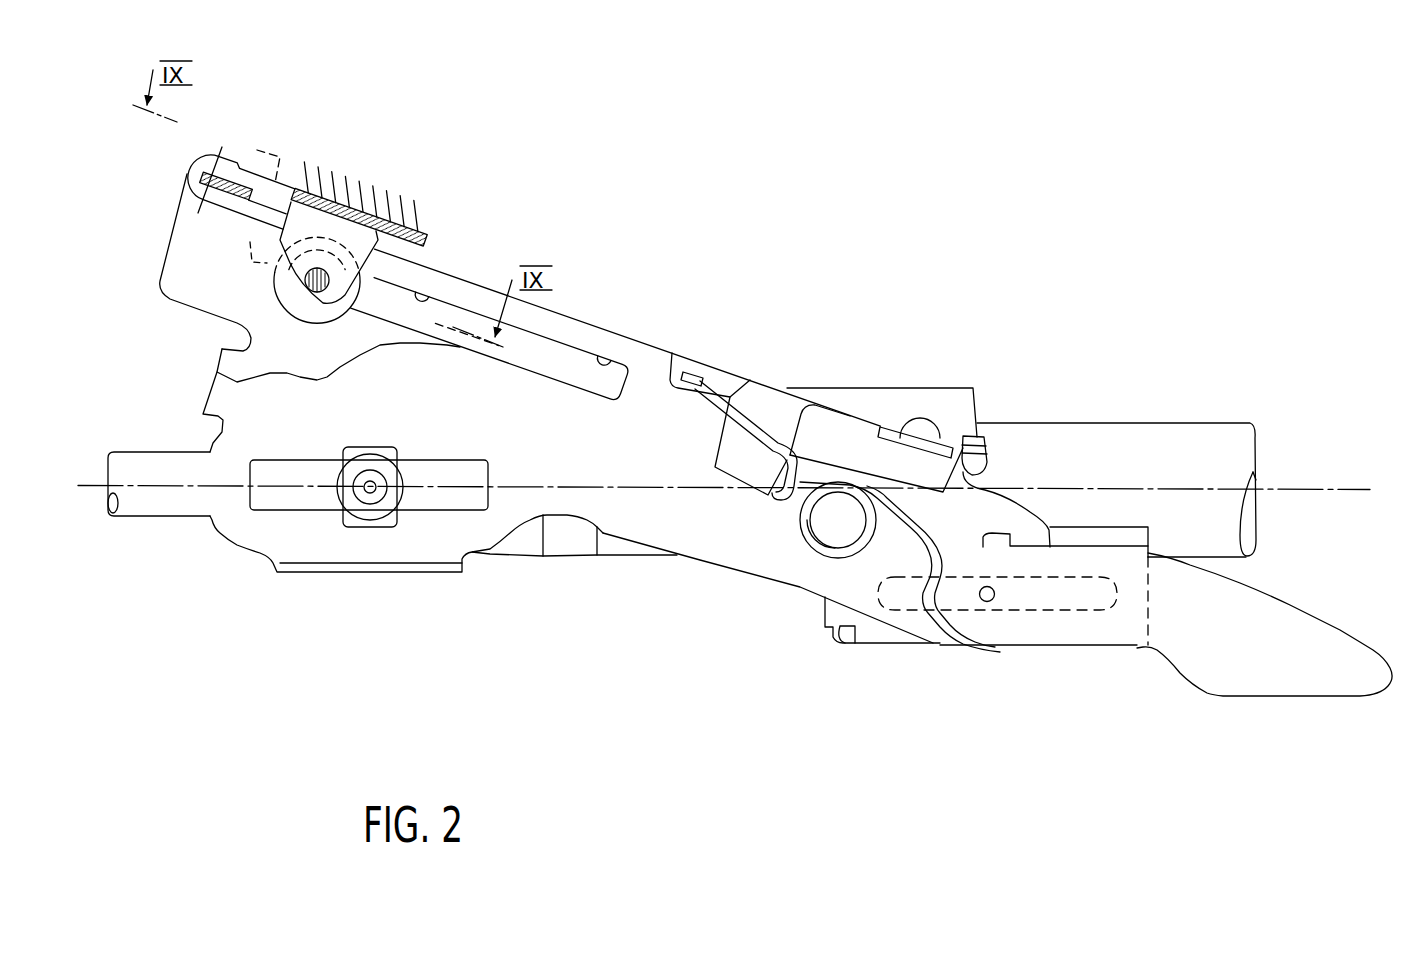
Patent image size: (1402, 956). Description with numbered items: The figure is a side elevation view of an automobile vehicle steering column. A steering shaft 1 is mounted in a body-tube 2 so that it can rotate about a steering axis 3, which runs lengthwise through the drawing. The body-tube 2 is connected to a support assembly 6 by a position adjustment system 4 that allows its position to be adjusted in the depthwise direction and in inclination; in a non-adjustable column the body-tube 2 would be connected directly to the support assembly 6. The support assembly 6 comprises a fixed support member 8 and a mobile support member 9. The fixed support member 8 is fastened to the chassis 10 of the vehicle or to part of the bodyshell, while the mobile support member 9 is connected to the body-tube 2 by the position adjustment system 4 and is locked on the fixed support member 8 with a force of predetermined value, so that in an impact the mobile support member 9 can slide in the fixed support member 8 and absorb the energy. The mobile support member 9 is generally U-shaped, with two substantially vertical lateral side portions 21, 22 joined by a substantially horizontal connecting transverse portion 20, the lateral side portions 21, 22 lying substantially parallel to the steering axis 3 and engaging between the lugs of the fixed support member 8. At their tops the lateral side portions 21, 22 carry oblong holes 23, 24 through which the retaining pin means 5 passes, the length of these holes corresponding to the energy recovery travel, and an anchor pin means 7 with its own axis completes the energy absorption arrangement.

The steering shaft 1 is at (162, 500).
The body-tube 2 is at (1115, 447).
The steering axis 3 is at (1318, 489).
The position adjustment system 4 is at (993, 612).
The retaining pin means 5 is at (304, 285).
The support assembly 6 is at (666, 343).
The anchor pin means 7 is at (204, 168).
The fixed support member 8 is at (384, 222).
The mobile support member 9 is at (747, 548).
The chassis 10 is at (327, 188).
The connecting transverse portion 20 is at (576, 318).
The lateral side portion 21 is at (197, 247).
The lateral side portion 22 is at (588, 470).
The oblong hole 23 is at (428, 300).
The oblong hole 24 is at (604, 360).